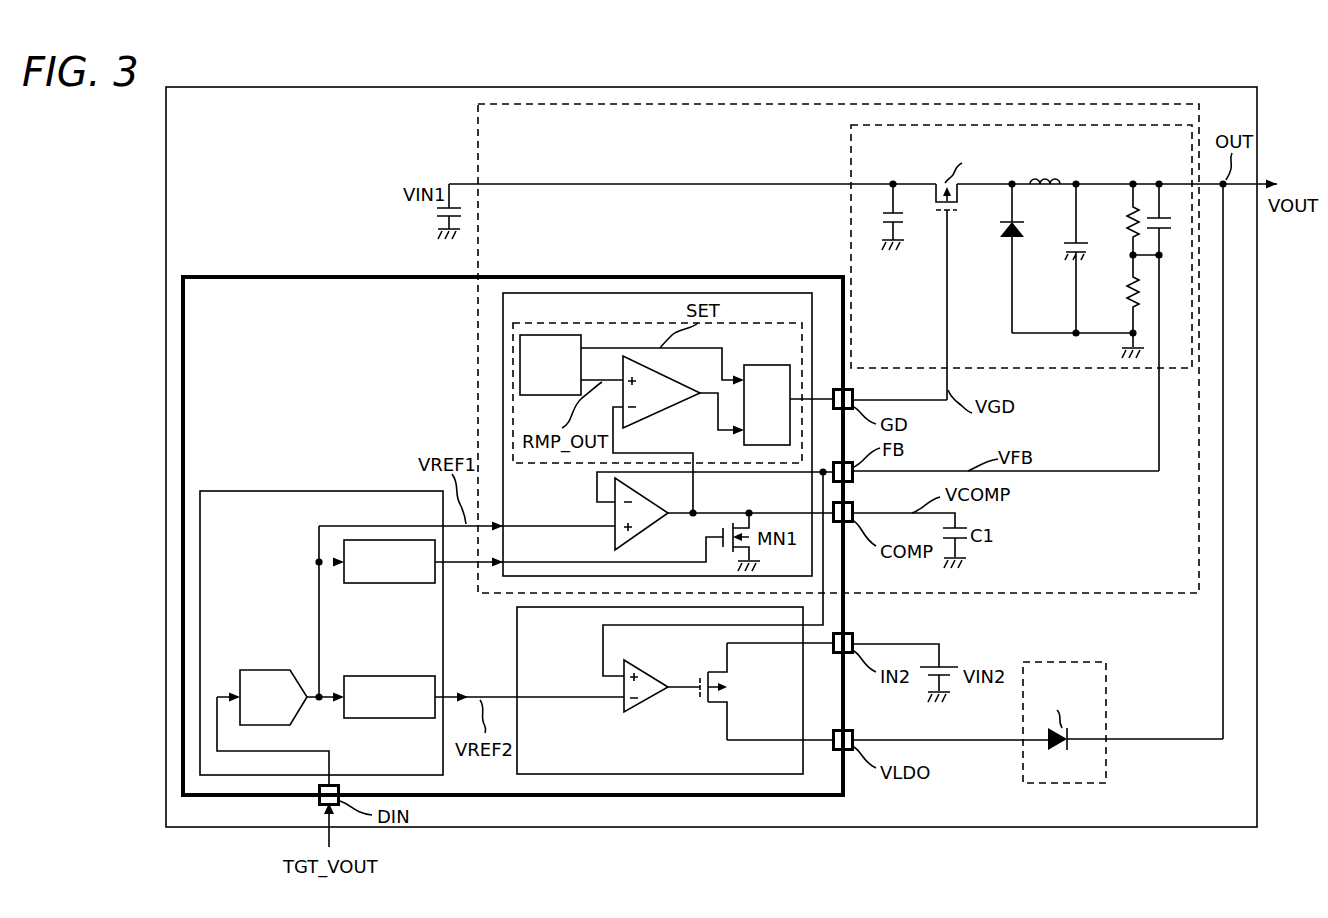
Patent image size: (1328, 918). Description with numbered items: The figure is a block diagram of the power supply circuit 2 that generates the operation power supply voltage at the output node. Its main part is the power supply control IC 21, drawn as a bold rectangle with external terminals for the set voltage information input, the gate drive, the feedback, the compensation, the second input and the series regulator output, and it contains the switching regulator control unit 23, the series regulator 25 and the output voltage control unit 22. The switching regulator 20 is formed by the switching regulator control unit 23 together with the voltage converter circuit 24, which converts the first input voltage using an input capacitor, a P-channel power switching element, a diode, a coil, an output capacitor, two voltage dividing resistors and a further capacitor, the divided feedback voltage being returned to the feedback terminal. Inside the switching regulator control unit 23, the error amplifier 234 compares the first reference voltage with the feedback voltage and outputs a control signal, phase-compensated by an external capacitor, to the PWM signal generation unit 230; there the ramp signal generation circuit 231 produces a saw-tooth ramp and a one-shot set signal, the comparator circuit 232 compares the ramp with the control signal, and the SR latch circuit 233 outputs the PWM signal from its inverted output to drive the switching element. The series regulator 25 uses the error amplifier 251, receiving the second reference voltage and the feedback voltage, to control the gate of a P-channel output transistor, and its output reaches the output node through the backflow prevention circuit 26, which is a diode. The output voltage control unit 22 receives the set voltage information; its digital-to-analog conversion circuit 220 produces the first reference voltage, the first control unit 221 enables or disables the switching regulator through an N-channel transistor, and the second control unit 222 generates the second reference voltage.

The power supply circuit 2 is at (1257, 283).
The switching regulator 20 is at (479, 139).
The power supply control IC 21 is at (232, 277).
The output voltage control unit 22 is at (232, 490).
The switching regulator control unit 23 is at (502, 317).
The voltage converter circuit 24 is at (851, 153).
The series regulator 25 is at (517, 648).
The backflow prevention circuit 26 is at (1106, 677).
The digital-to-analog conversion circuit 220 is at (265, 668).
The first control unit 221 is at (388, 584).
The second control unit 222 is at (388, 719).
The PWM signal generation unit 230 is at (778, 323).
The ramp signal generation circuit 231 is at (520, 359).
The comparator circuit 232 is at (658, 413).
The SR latch circuit 233 is at (767, 365).
The error amplifier 234 is at (615, 535).
The error amplifier 251 is at (624, 707).